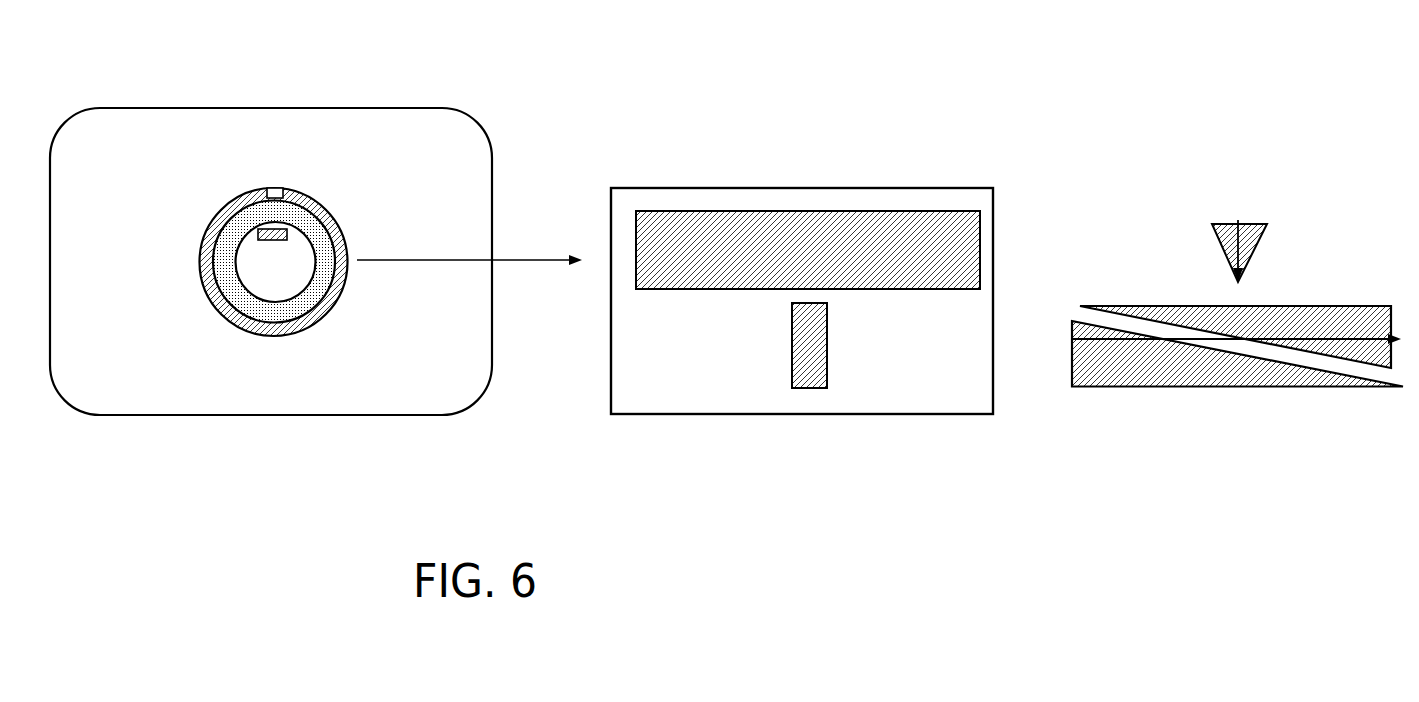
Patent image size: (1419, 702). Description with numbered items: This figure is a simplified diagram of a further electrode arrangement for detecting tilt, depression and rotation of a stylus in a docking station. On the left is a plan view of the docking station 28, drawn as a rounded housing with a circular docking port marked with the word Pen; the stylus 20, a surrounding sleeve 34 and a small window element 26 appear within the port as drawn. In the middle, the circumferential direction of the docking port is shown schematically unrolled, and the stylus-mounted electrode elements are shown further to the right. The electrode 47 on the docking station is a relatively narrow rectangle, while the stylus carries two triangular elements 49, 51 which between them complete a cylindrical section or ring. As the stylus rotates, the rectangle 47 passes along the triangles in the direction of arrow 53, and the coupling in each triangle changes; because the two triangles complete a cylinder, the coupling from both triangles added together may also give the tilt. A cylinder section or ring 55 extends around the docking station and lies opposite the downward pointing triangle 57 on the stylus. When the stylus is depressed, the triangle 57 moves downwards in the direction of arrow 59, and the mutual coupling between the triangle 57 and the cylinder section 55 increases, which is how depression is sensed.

The docking station 28 is at (100, 108).
The pen 20 is at (258, 255).
The sleeve 34 is at (288, 196).
The sensor window 26 is at (286, 233).
The cylinder section or ring 55 is at (735, 235).
The electrode 47 is at (805, 417).
The downward pointing triangle 57 is at (1248, 232).
The arrow 59 is at (1237, 238).
The triangular element 51 is at (1187, 315).
The triangular element 49 is at (1192, 370).
The arrow 53 is at (1312, 342).